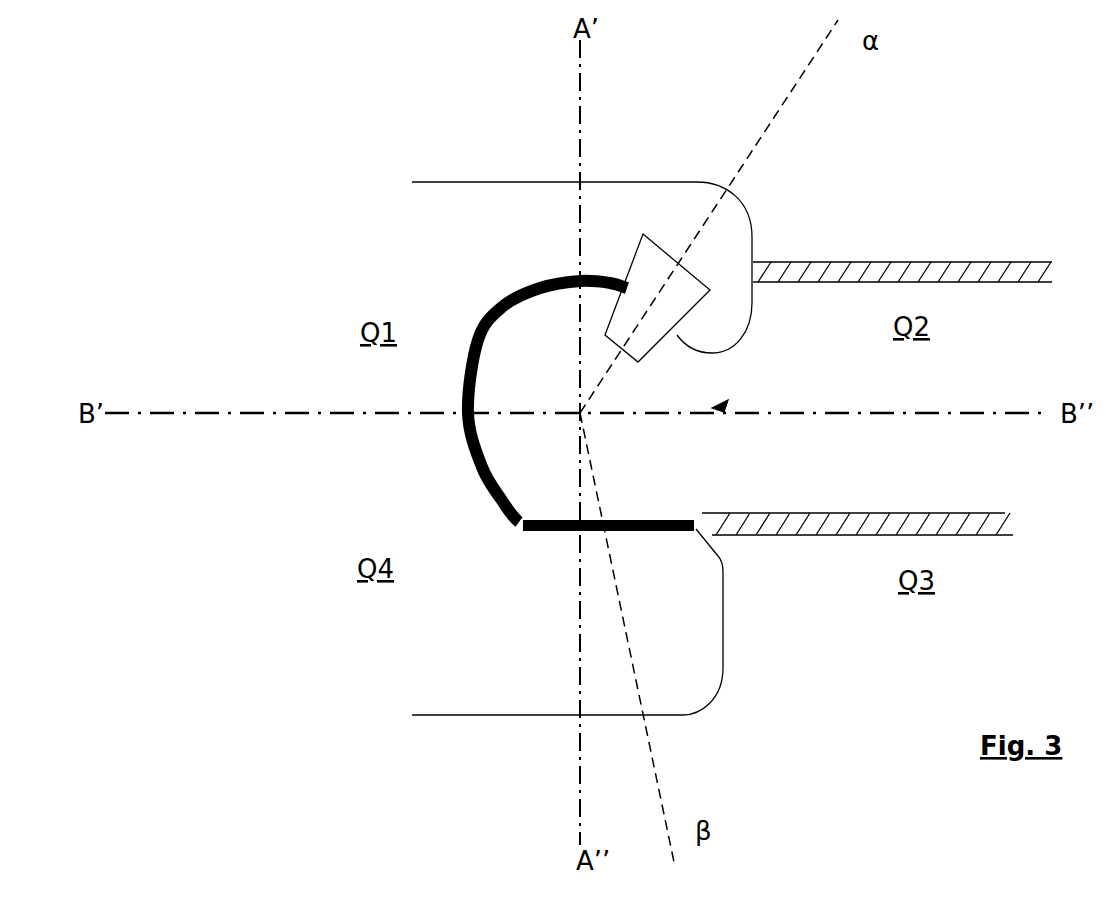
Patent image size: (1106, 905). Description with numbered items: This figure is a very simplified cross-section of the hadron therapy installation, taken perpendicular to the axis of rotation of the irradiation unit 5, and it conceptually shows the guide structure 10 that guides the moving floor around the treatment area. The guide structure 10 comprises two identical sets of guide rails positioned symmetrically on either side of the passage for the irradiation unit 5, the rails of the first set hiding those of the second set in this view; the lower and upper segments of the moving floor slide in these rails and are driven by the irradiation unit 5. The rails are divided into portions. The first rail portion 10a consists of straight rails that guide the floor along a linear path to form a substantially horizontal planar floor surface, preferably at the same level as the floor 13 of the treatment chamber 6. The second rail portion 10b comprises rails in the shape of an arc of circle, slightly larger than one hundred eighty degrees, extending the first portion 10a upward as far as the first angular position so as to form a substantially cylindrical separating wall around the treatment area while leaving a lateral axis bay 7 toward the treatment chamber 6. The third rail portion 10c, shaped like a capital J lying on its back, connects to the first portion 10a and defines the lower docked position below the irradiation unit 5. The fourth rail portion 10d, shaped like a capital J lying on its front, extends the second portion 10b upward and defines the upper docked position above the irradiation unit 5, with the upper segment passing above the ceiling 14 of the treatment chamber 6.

The irradiation unit 5 is at (645, 305).
The treatment chamber 6 is at (546, 379).
The lateral axis bay 7 is at (718, 407).
The guide structure 10 is at (448, 170).
The first rail portion 10a is at (562, 532).
The second rail portion 10b is at (464, 427).
The third rail portion 10c is at (723, 630).
The fourth rail portion 10d is at (752, 223).
The floor of the treatment chamber 13 is at (835, 513).
The ceiling of the treatment chamber 14 is at (902, 262).